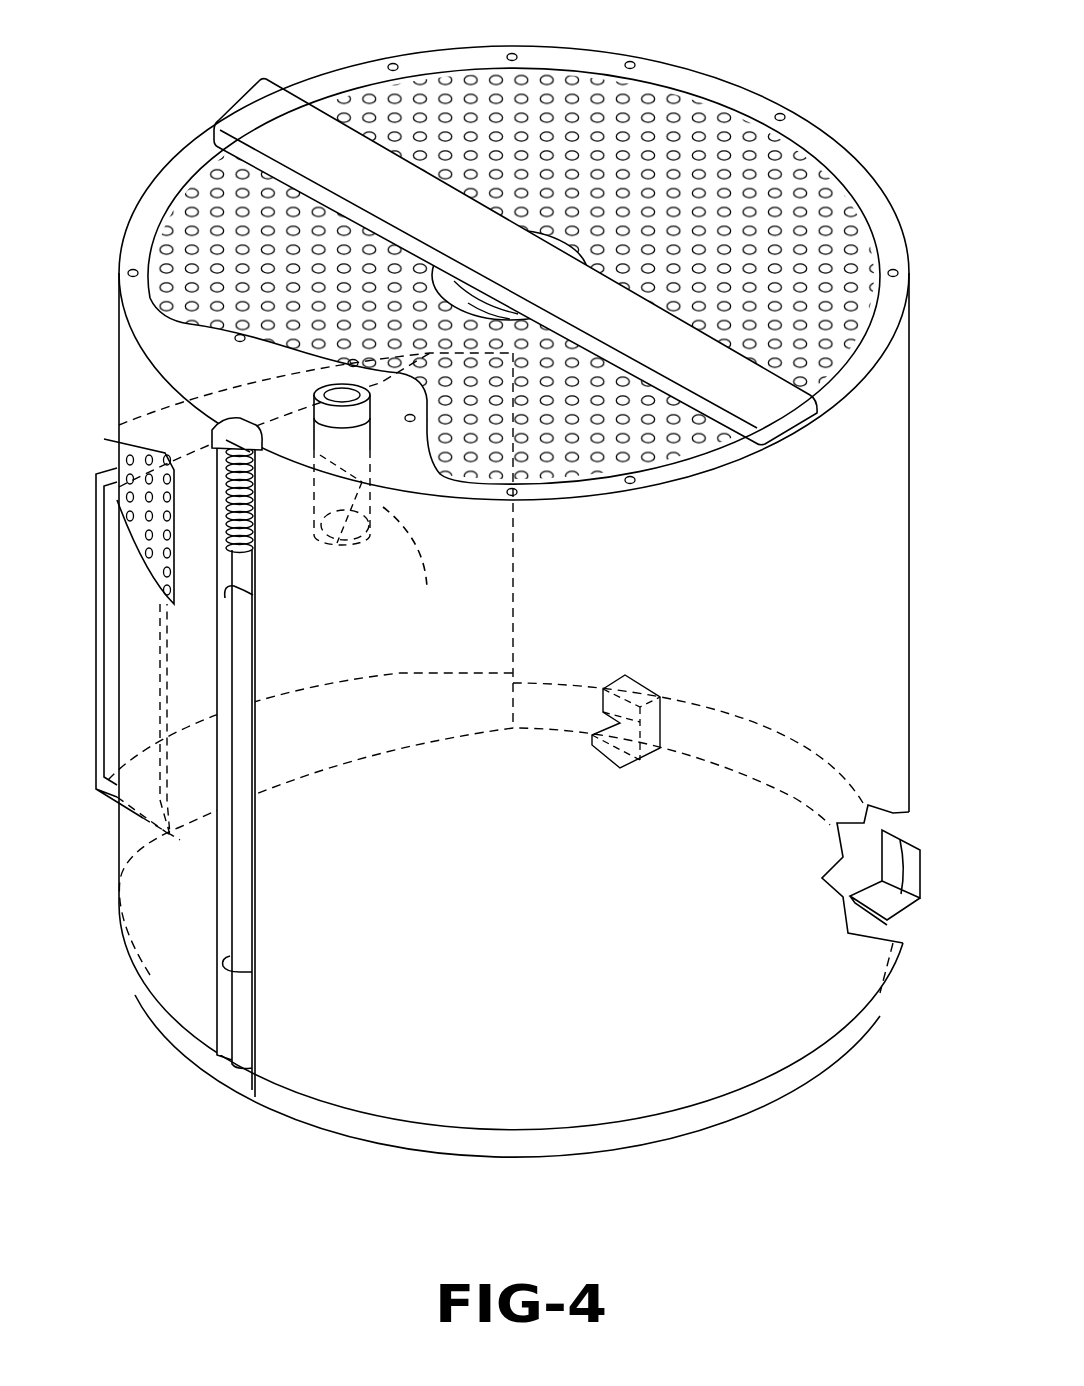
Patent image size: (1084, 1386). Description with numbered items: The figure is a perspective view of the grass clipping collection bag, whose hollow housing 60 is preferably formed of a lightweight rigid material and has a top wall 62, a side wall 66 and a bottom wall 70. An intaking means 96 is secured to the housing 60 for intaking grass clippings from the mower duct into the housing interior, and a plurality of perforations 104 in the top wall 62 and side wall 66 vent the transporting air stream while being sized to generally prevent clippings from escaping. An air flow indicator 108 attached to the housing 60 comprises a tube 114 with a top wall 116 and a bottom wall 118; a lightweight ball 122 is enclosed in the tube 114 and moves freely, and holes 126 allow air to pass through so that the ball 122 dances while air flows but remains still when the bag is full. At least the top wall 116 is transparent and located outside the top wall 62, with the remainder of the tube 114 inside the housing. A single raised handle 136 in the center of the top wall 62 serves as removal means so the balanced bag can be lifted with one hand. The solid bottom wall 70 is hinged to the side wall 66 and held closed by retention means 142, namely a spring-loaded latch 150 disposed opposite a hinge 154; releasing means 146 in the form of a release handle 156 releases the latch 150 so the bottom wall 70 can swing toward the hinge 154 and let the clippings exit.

The housing 60 is at (903, 227).
The top wall 62 is at (464, 245).
The side wall 66 is at (910, 640).
The bottom wall 70 is at (703, 1126).
The intaking means 96 is at (100, 565).
The perforations 104 is at (192, 230).
The air flow indicator 108 is at (330, 404).
The tube 114 is at (418, 565).
The top wall 116 is at (266, 398).
The bottom wall 118 is at (338, 556).
The lightweight ball 122 is at (477, 503).
The holes 126 is at (373, 510).
The raised handle 136 is at (258, 104).
The retention means 142 is at (252, 972).
The releasing means 146 is at (217, 418).
The spring-loaded latch 150 is at (256, 531).
The hinge 154 is at (907, 905).
The release handle 156 is at (250, 436).